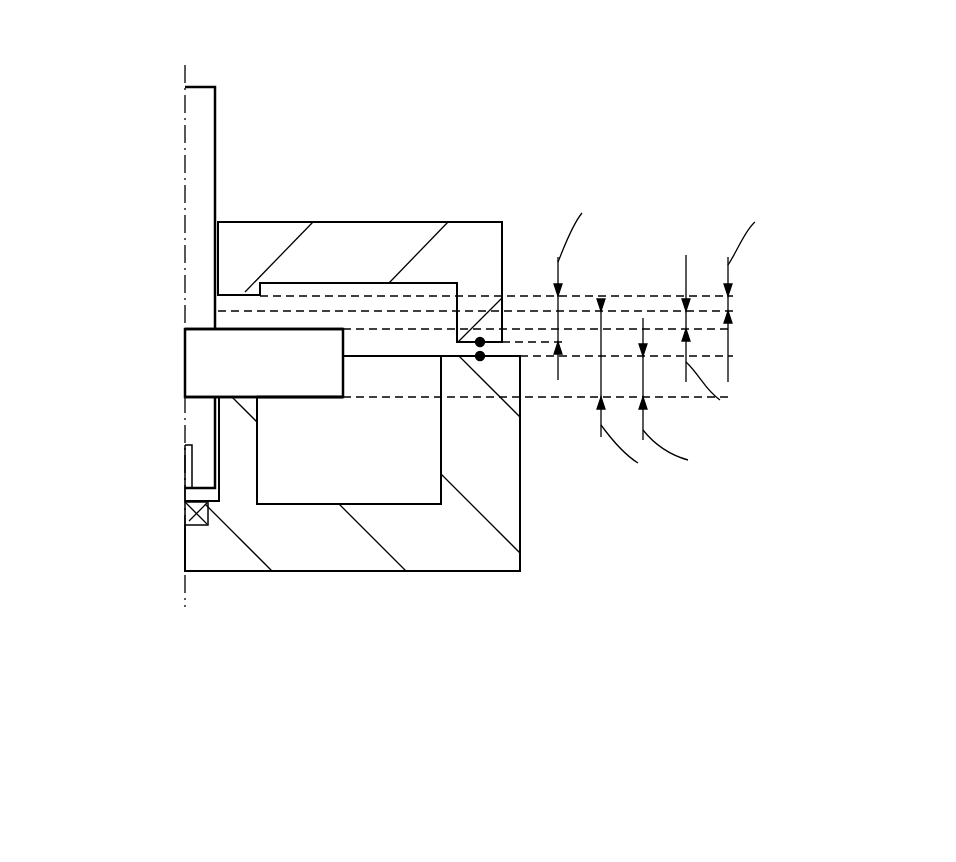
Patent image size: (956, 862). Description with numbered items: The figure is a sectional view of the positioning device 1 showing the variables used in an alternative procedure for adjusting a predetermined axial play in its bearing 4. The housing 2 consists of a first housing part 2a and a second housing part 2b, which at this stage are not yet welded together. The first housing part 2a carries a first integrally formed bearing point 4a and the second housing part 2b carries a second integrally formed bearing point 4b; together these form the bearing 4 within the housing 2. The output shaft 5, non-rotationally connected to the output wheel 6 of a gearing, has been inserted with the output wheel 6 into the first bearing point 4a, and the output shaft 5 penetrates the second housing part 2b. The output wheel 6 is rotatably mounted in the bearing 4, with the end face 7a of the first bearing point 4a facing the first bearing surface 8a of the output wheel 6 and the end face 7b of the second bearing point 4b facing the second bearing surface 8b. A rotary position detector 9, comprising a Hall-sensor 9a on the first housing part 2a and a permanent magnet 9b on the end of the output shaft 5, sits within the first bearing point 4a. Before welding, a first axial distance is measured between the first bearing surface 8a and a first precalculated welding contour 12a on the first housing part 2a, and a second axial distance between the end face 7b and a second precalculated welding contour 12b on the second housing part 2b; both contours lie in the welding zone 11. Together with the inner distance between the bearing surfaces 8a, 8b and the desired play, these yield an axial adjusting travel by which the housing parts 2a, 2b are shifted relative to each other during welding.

The positioning device 1 is at (440, 145).
The housing 2 is at (545, 480).
The first housing part 2a is at (471, 549).
The second housing part 2b is at (360, 262).
The bearing 4 is at (270, 248).
The first bearing point 4a is at (228, 422).
The second bearing point 4b is at (236, 292).
The output shaft 5 is at (203, 113).
The output wheel 6 is at (287, 371).
The end face of the first bearing point 7a is at (240, 388).
The end face of the second bearing point 7b is at (253, 303).
The first bearing surface 8a is at (275, 397).
The second bearing surface 8b is at (238, 323).
The rotary position detector 9 is at (157, 508).
The Hall-sensor 9a is at (207, 524).
The permanent magnet 9b is at (190, 472).
The welding zone 11 is at (483, 288).
The first precalculated welding contour 12a is at (478, 358).
The second precalculated welding contour 12b is at (478, 344).